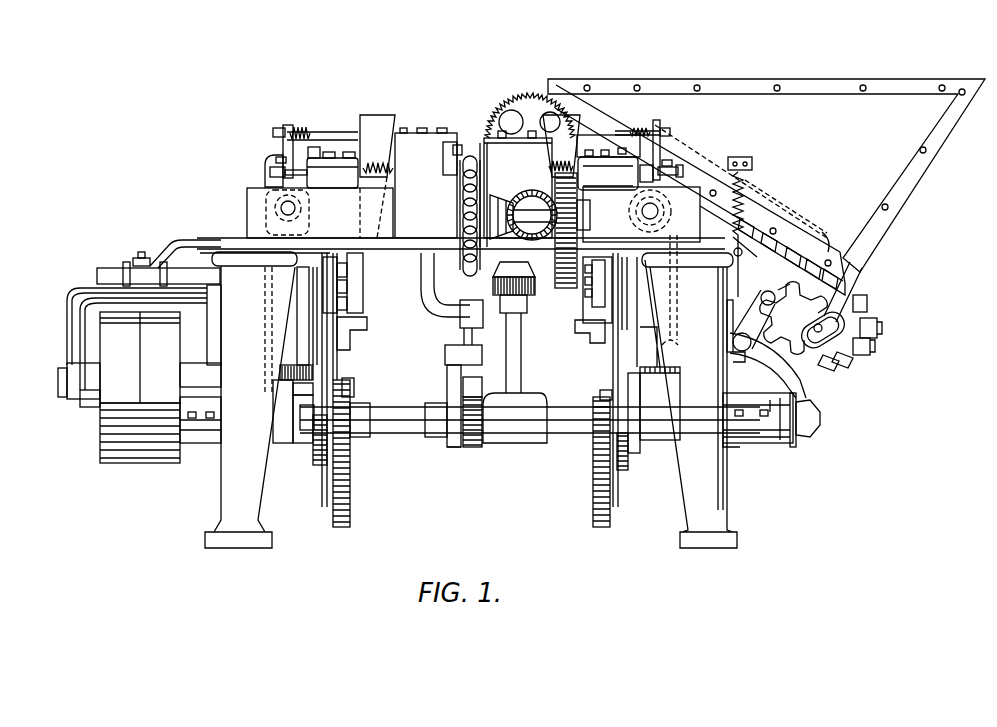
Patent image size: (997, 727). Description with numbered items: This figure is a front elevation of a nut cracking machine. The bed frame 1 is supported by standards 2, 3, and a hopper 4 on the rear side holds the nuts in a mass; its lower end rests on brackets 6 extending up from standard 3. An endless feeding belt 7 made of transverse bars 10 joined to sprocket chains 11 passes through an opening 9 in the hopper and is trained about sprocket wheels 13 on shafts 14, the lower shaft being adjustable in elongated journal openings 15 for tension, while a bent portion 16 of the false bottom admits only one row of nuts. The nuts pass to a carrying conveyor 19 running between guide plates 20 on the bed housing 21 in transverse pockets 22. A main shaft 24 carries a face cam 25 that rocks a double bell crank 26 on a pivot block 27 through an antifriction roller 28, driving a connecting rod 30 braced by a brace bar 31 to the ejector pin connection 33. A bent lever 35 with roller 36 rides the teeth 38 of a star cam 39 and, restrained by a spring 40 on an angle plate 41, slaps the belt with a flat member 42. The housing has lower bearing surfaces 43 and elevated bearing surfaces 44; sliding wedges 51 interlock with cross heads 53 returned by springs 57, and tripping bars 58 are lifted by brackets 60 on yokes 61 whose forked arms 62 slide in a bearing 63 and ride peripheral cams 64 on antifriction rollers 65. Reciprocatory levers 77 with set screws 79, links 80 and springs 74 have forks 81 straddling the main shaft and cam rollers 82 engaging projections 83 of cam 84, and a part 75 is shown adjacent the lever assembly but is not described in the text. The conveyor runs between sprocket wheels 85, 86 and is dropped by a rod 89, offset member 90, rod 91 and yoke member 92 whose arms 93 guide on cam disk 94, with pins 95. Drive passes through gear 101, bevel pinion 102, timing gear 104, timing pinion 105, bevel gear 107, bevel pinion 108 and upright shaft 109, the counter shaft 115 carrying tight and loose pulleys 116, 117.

The bed frame 1 is at (398, 254).
The standard 2 is at (221, 505).
The standard 3 is at (690, 512).
The hopper 4 is at (895, 170).
The brackets 6 is at (858, 276).
The endless feeding belt 7 is at (790, 250).
The opening 9 is at (855, 258).
The bars 10 is at (875, 345).
The sprocket chains 11 is at (882, 328).
The sprocket wheels 13 is at (523, 96).
The shafts 14 is at (868, 303).
The elongated journal openings 15 is at (870, 358).
The bent portion 16 is at (827, 238).
The carrying belt or conveyor 19 is at (463, 200).
The guide plates 20 is at (440, 133).
The bed housing 21 is at (392, 205).
The transverse pockets 22 is at (462, 186).
The main shaft 24 is at (418, 425).
The face cam 25 is at (796, 437).
The double bell crank 26 is at (815, 386).
The pivot block 27 is at (736, 355).
The antifriction roller 28 is at (822, 418).
The connecting rod 30 is at (727, 270).
The brace bar 31 is at (735, 300).
The pin connection 33 is at (778, 406).
The bent lever 35 is at (770, 355).
The antifriction roller 36 is at (793, 447).
The tooth 38 is at (760, 443).
The star cam 39 is at (730, 447).
The spring 40 is at (745, 190).
The angle plate 41 is at (752, 162).
The flat member 42 is at (775, 222).
The lower bearing surfaces 43 is at (641, 214).
The elevated bearing surfaces 44 is at (425, 133).
The sliding wedges 51 is at (375, 115).
The cross heads 53 is at (342, 142).
The springs 57 is at (393, 168).
The tripping bars 58 is at (360, 300).
The brackets 60 is at (365, 333).
The yokes 61 is at (340, 372).
The forked arms 62 is at (327, 507).
The bearing 63 is at (340, 292).
The peripheral cams 64 is at (352, 503).
The antifriction rollers 65 is at (354, 390).
The springs 74 is at (292, 130).
The spring 75 is at (273, 131).
The reciprocatory levers 77 is at (281, 209).
The set screws 79 is at (714, 137).
The links 80 is at (268, 160).
The forks 81 is at (278, 445).
The cam rollers 82 is at (280, 378).
The cam projections 83 is at (293, 393).
The cam 84 is at (310, 443).
The sprocket wheel 85 is at (470, 160).
The sprocket wheel 86 is at (458, 385).
The rod 89 is at (316, 442).
The offset member 90 is at (428, 300).
The rod 91 is at (465, 325).
The yoke member 92 is at (468, 350).
The arms 93 is at (456, 448).
The cam disk 94 is at (476, 450).
The pins 95 is at (483, 388).
The gear 101 is at (522, 185).
The bevel pinion 102 is at (535, 200).
The timing gear 104 is at (608, 176).
The timing pinion 105 is at (566, 285).
The bevel gear 107 is at (500, 225).
The bevel pinion 108 is at (527, 305).
The upright shaft 109 is at (522, 335).
The counter shaft 115 is at (60, 397).
The tight pulley 116 is at (102, 450).
The loose pulley 117 is at (180, 465).